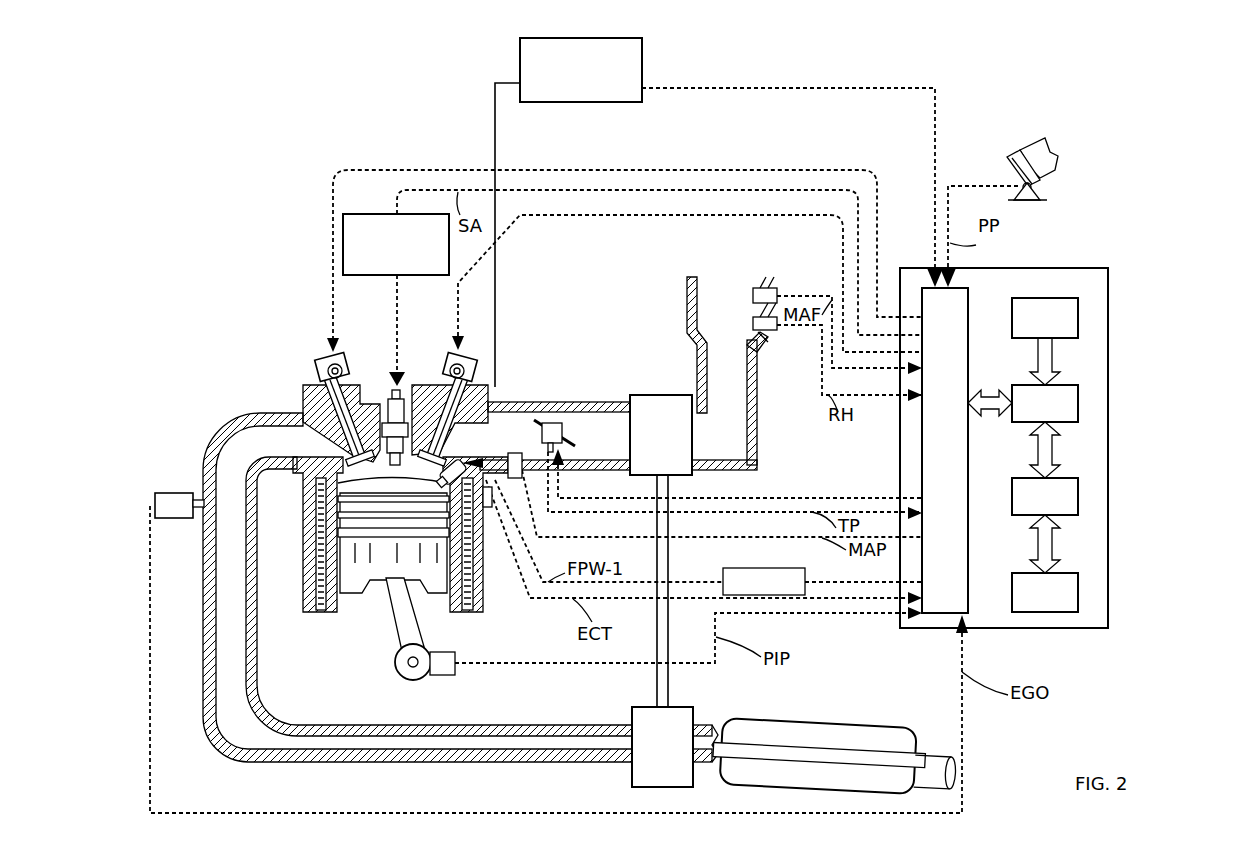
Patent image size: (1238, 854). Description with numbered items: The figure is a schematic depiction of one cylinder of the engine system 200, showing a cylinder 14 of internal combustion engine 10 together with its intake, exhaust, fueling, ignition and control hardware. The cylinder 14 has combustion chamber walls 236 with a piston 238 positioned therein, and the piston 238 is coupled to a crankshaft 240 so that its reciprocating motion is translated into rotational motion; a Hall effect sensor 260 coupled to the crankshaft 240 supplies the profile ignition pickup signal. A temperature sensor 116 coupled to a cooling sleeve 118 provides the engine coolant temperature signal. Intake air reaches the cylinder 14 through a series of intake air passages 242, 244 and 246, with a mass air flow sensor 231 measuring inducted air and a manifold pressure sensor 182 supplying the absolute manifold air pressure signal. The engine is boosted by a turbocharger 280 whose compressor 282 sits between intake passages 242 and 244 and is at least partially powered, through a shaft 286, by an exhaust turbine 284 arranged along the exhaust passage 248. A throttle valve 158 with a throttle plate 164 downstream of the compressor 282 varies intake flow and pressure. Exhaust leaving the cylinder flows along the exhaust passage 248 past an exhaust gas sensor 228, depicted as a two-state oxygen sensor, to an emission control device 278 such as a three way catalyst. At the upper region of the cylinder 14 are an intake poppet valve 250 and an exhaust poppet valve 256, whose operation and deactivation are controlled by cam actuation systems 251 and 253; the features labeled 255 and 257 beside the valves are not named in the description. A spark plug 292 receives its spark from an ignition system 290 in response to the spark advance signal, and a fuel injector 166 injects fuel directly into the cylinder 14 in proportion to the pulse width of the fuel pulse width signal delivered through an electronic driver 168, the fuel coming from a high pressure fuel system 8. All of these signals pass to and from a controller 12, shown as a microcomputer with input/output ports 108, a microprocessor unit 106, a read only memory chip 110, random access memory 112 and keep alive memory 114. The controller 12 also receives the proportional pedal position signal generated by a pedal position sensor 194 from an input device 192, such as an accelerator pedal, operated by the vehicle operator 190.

The engine system 200 is at (130, 103).
The internal combustion engine 10 is at (247, 226).
The high pressure fuel system 8 is at (642, 52).
The ignition system 290 is at (370, 205).
The cam actuation system 253 is at (340, 354).
The cam actuation system 251 is at (443, 354).
The intake valve position sensor 257 is at (362, 372).
The spark plug 292 is at (390, 417).
The intake poppet valve 250 is at (413, 450).
The exhaust valve 255 is at (455, 392).
The exhaust poppet valve 256 is at (360, 456).
The throttle plate 164 is at (532, 421).
The throttle valve 158 is at (553, 421).
The exhaust passage 248 is at (417, 587).
The intake air passage 246 is at (560, 423).
The intake air passage 244 is at (624, 401).
The compressor 282 is at (642, 395).
The intake air passage 242 is at (722, 345).
The mass air flow sensor 231 is at (770, 290).
The exhaust gas sensor 228 is at (155, 498).
The cylinder 14 is at (355, 504).
The fuel injector 166 is at (460, 463).
The manifold pressure sensor 182 is at (518, 480).
The electronic driver 168 is at (725, 572).
The combustion chamber walls 236 is at (340, 602).
The piston 238 is at (378, 590).
The temperature sensor 116 is at (490, 508).
The cooling sleeve 118 is at (480, 592).
The crankshaft 240 is at (405, 678).
The Hall effect sensor 260 is at (445, 678).
The turbocharger 280 is at (638, 689).
The shaft 286 is at (660, 672).
The exhaust turbine 284 is at (632, 772).
The emission control device 278 is at (858, 720).
The input device 192 is at (1010, 165).
The vehicle operator 190 is at (1058, 150).
The pedal position sensor 194 is at (1040, 187).
The input/output ports 108 is at (968, 298).
The controller 12 is at (1100, 268).
The read only memory chip 110 is at (1078, 318).
The microprocessor unit 106 is at (1078, 400).
The random access memory 112 is at (1078, 498).
The keep alive memory 114 is at (1078, 595).